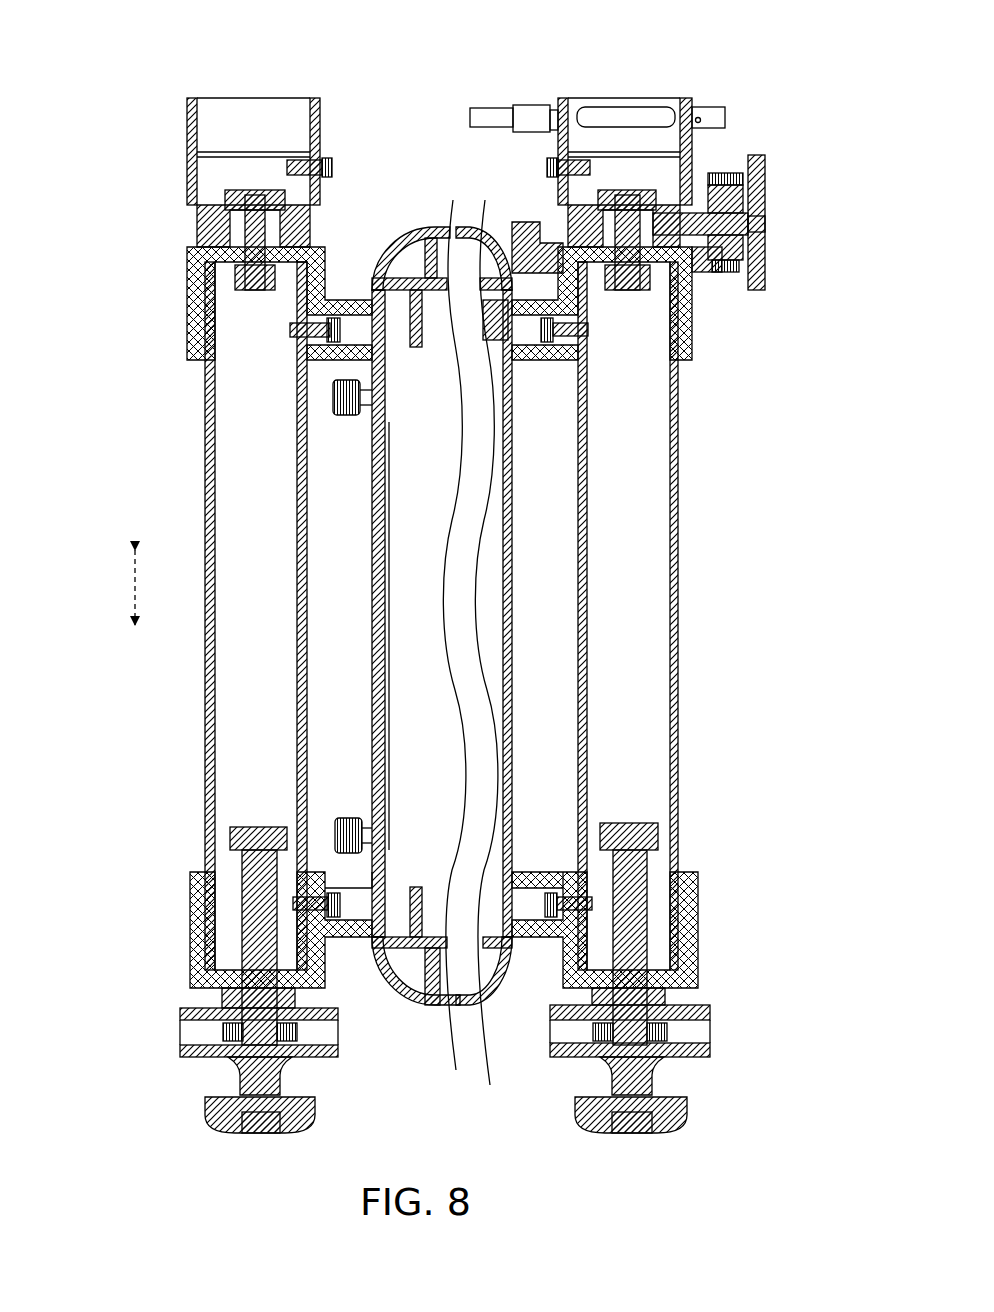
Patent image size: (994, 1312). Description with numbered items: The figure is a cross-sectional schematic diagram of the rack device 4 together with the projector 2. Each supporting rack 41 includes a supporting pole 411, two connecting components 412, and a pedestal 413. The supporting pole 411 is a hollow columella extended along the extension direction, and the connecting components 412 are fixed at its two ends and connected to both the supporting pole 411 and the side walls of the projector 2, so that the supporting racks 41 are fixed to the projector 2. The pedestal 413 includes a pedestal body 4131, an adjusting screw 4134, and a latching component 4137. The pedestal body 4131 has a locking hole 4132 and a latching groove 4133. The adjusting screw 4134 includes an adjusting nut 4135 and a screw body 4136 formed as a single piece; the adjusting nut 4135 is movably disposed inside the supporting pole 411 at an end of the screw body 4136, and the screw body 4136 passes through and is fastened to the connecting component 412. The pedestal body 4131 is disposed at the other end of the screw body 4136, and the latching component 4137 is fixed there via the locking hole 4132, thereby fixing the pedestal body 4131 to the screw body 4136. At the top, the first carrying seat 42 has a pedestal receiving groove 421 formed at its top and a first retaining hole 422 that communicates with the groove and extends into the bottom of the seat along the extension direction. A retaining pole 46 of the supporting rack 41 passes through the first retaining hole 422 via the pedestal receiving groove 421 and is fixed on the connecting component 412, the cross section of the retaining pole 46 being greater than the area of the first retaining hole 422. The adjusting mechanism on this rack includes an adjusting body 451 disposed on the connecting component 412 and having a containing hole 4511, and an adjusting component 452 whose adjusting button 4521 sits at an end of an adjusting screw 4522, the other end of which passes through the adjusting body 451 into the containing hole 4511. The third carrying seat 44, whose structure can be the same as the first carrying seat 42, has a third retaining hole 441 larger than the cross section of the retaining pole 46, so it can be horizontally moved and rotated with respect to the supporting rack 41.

The projector 2 is at (440, 228).
The rack device 4 is at (128, 266).
The supporting rack 41 is at (400, 616).
The supporting pole 411 is at (207, 395).
The connecting component 412 is at (189, 325).
The pedestal 413 is at (389, 1081).
The pedestal body 4131 is at (215, 1133).
The locking hole 4132 is at (185, 1030).
The latching groove 4133 is at (222, 1078).
The adjusting screw 4134 is at (343, 903).
The adjusting nut 4135 is at (255, 827).
The screw body 4136 is at (242, 850).
The latching component 4137 is at (300, 1030).
The first carrying seat 42 is at (614, 187).
The pedestal receiving groove 421 is at (595, 135).
The first retaining hole 422 is at (645, 265).
The third carrying seat 44 is at (207, 166).
The third retaining hole 441 is at (232, 225).
The retaining pole 46 is at (268, 190).
The adjusting body 451 is at (453, 205).
The containing hole 4511 is at (551, 233).
The adjusting component 452 is at (735, 302).
The adjusting button 4521 is at (709, 288).
The adjusting screw 4522 is at (765, 285).